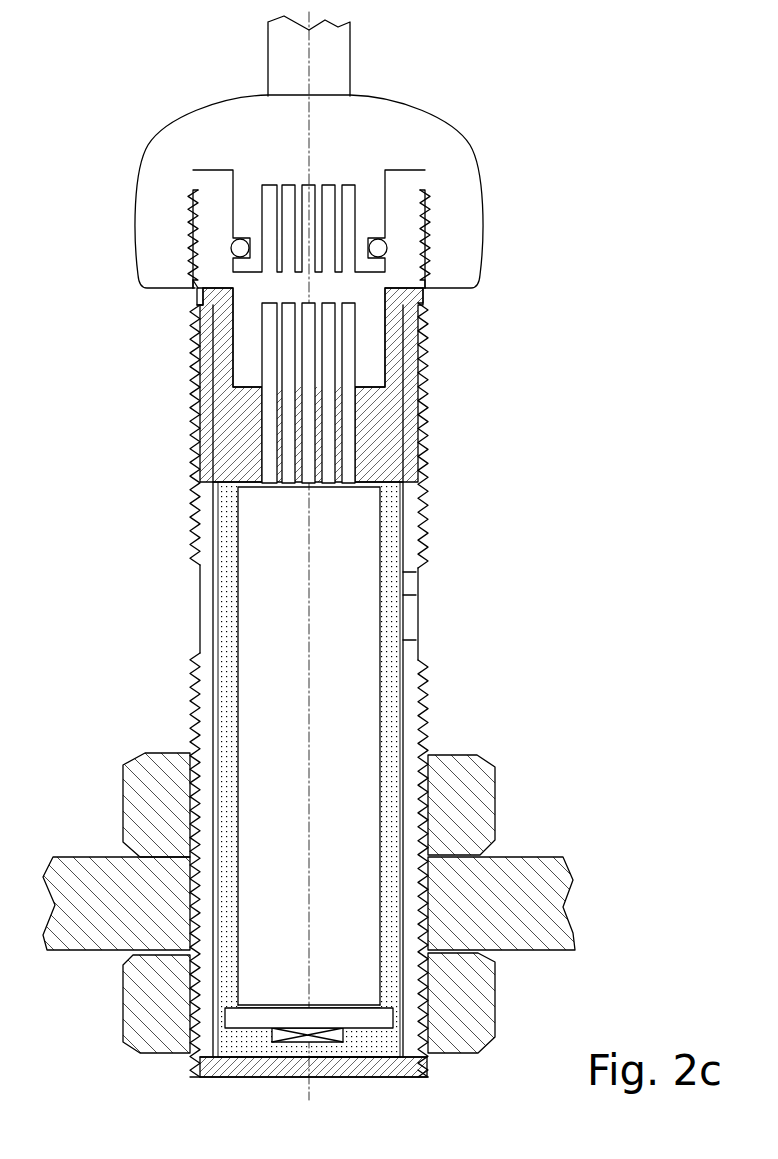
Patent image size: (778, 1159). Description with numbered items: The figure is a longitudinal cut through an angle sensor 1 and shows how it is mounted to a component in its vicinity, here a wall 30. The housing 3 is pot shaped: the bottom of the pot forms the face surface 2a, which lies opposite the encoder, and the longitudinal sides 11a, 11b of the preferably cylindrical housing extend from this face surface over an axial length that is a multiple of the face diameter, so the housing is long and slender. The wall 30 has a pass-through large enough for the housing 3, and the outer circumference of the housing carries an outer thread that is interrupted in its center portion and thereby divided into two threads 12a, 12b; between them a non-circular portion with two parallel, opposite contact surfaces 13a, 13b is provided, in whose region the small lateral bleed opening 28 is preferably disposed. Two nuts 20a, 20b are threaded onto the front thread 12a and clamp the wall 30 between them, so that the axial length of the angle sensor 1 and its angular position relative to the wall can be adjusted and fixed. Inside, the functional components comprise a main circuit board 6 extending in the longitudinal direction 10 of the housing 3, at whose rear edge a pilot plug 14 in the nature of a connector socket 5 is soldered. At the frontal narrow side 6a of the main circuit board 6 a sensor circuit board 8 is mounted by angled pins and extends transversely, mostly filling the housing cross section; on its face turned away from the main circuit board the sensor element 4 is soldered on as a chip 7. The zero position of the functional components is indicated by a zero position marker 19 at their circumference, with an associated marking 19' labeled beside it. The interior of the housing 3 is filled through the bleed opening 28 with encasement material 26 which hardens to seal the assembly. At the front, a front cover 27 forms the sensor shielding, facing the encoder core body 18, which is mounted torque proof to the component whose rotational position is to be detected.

The angle sensor 1 is at (135, 538).
The face surface 2a is at (313, 1079).
The housing 3 is at (315, 695).
The sensor element 4 is at (273, 1038).
The connector socket 5 is at (308, 393).
The main circuit board 6 is at (309, 746).
The narrow side of the main circuit board 6a is at (247, 1006).
The chip 7 is at (307, 1035).
The sensor circuit board 8 is at (240, 1018).
The longitudinal direction 10 is at (308, 632).
The longitudinal side 11a is at (193, 343).
The longitudinal side 11b is at (425, 342).
The thread 12a is at (423, 523).
The thread 12b is at (415, 683).
The contact surface 13a is at (200, 655).
The contact surface 13b is at (420, 602).
The pilot plug 14 is at (236, 437).
The encoder core body 18 is at (427, 1063).
The zero position marker 19 is at (176, 302).
The seal groove 19' is at (139, 251).
The nut 20a is at (143, 792).
The nut 20b is at (143, 1022).
The encasement material 26 is at (395, 642).
The front cover 27 is at (357, 1066).
The bleed opening 28 is at (410, 580).
The wall 30 is at (63, 938).